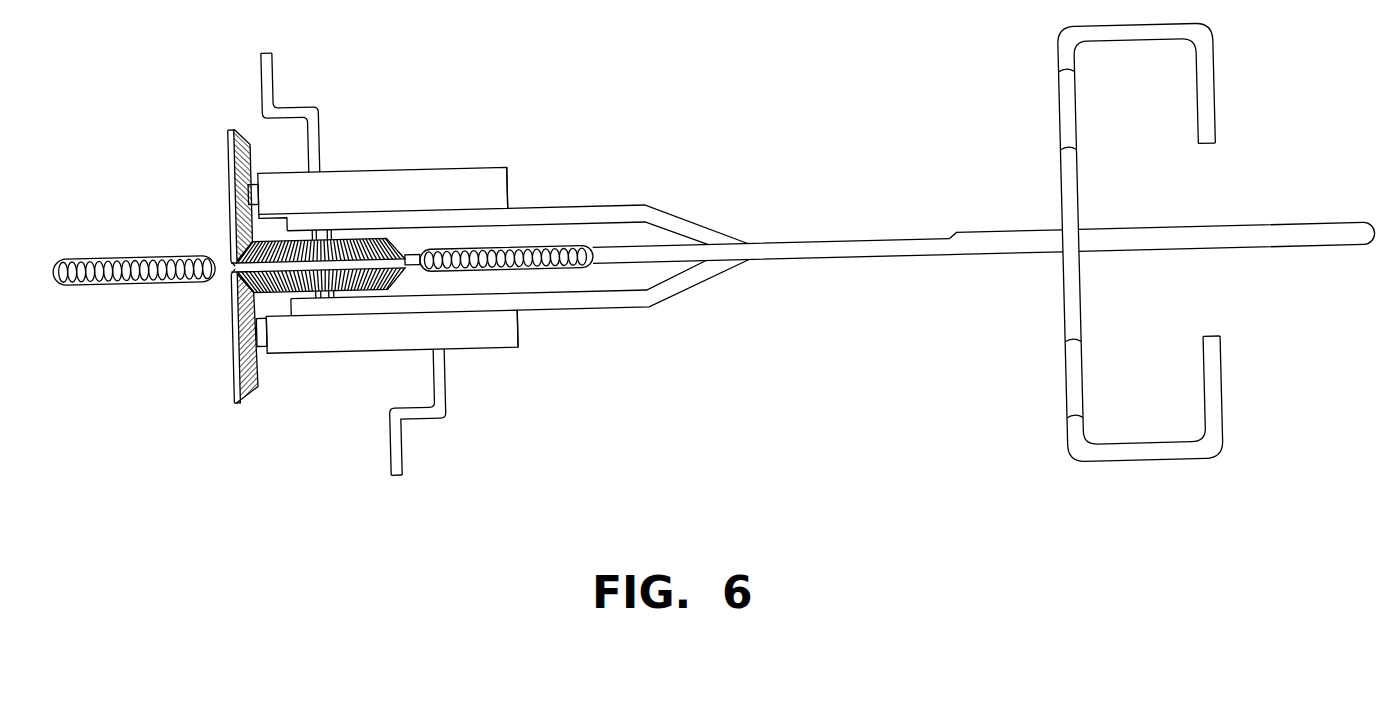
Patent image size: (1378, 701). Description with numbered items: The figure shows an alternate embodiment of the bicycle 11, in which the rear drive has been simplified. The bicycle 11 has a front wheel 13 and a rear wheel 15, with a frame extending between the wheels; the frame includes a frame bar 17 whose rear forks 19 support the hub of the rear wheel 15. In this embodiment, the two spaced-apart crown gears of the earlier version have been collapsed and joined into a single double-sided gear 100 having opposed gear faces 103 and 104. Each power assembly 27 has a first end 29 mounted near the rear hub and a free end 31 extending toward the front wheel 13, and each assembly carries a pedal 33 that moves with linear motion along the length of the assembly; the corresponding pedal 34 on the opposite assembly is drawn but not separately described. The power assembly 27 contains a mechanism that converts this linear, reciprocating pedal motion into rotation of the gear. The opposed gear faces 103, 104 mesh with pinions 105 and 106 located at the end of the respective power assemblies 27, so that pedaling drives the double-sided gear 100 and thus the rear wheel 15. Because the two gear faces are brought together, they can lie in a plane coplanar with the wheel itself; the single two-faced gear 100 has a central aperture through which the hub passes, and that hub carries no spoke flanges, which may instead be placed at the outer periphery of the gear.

The bicycle 11 is at (808, 182).
The front wheel 13 is at (1318, 238).
The rear wheel 15 is at (123, 285).
The frame bar 17 is at (858, 254).
The rear forks 19 is at (655, 212).
The power assembly 27 is at (457, 190).
The first end 29 is at (285, 194).
The free end 31 is at (513, 182).
The pedal 33 is at (418, 443).
The upper terminal tab 34 is at (288, 80).
The double-sided gear 100 is at (350, 217).
The gear face 103 is at (402, 279).
The gear face 104 is at (402, 249).
The pinion 105 is at (233, 340).
The pinion 106 is at (230, 193).